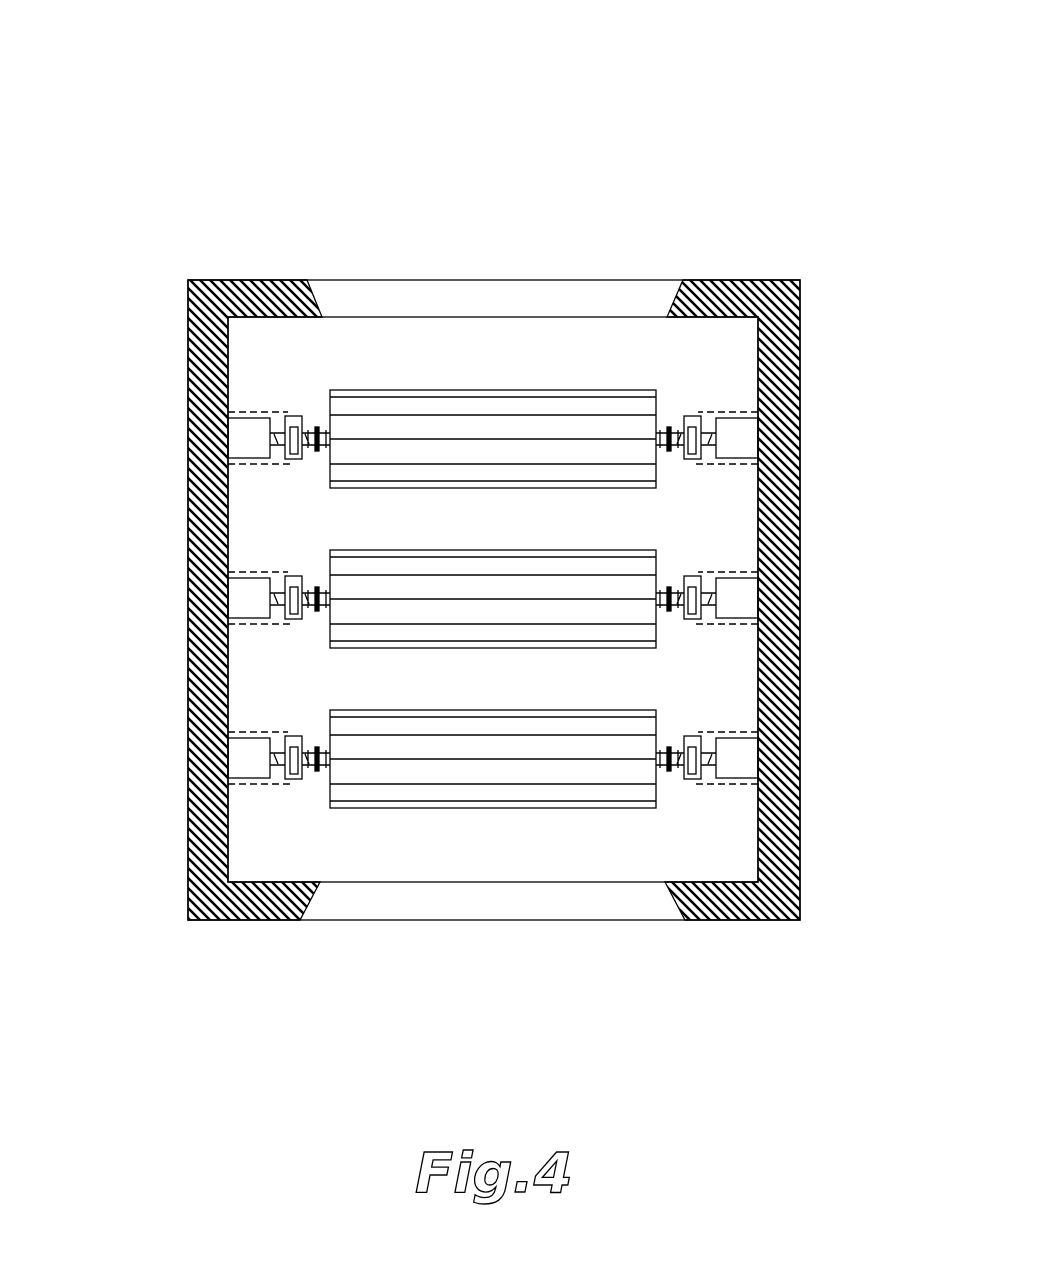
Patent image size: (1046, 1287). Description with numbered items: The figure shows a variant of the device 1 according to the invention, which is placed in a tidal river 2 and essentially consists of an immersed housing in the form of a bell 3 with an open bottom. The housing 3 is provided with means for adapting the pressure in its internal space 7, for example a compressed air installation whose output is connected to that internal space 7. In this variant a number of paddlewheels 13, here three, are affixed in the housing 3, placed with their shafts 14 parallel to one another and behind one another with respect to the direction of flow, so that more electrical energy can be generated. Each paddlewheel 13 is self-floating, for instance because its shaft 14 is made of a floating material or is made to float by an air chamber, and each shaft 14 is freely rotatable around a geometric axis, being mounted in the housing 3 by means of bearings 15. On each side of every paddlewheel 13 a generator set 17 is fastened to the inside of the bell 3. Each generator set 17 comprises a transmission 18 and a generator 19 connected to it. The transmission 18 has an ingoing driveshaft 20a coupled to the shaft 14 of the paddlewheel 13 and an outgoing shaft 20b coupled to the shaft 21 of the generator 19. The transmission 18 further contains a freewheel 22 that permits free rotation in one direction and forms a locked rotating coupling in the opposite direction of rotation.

The device 1 is at (160, 70).
The tidal river 2 is at (240, 979).
The housing 3 is at (207, 280).
The internal space 7 is at (703, 340).
The paddlewheel 13 is at (387, 598).
The shaft 14 is at (493, 540).
The bearings 15 is at (700, 938).
The generator set 17 is at (493, 594).
The transmission 18 is at (493, 545).
The generator 19 is at (493, 598).
The ingoing driveshaft 20a is at (499, 643).
The outgoing shaft 20b is at (500, 568).
The shaft of the generator 21 is at (494, 610).
The freewheel 22 is at (495, 633).